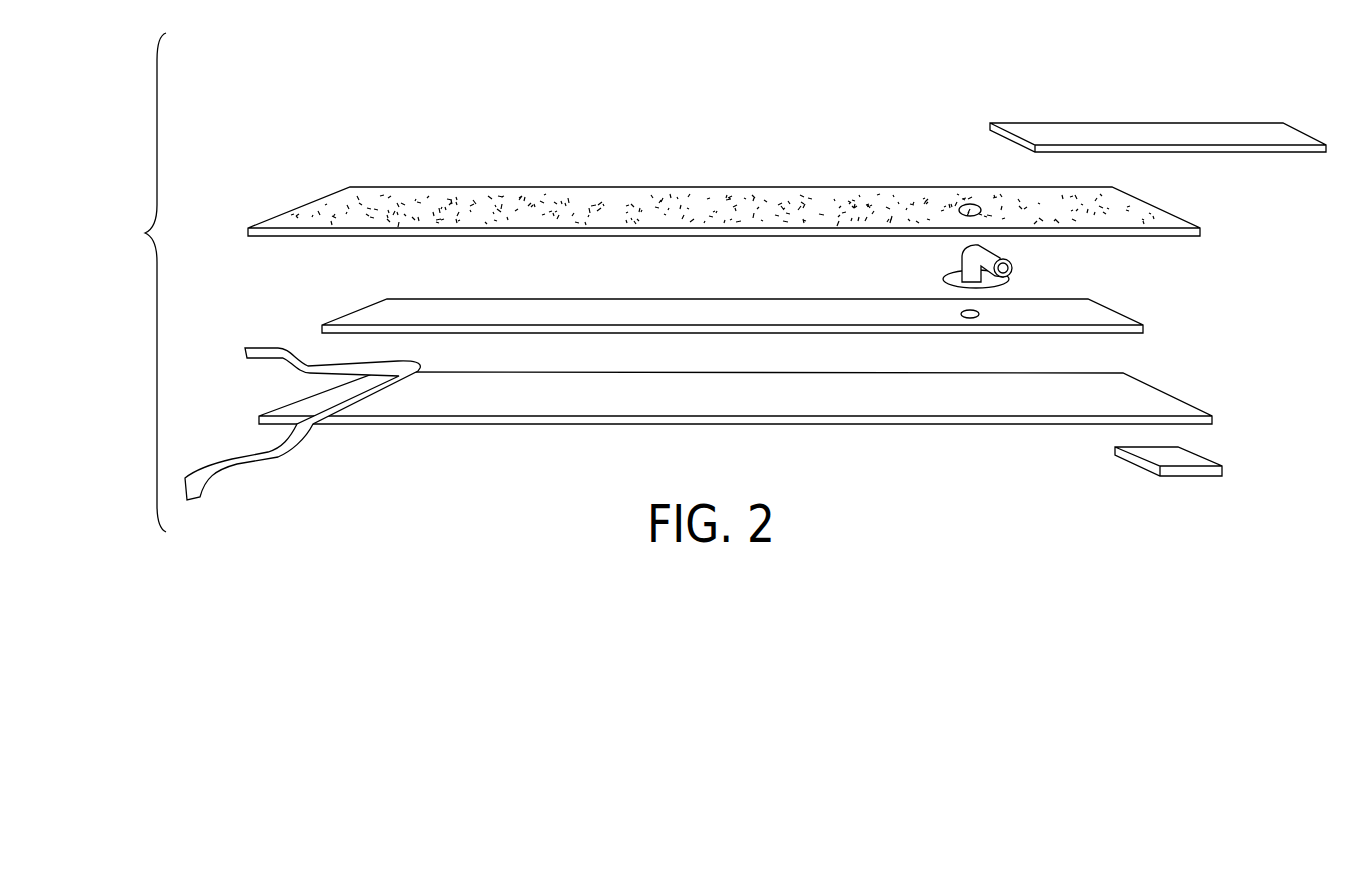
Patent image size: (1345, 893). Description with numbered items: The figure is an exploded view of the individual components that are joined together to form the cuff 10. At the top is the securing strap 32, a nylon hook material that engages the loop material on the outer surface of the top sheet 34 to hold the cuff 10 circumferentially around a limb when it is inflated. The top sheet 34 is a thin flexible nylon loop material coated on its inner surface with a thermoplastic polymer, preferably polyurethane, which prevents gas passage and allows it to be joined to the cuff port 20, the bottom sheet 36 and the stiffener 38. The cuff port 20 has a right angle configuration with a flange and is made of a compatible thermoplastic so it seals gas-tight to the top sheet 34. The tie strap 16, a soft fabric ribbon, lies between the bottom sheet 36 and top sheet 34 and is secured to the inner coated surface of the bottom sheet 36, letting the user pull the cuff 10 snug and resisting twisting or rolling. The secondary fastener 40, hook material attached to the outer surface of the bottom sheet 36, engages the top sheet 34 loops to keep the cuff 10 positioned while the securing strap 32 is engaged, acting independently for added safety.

The cuff 10 is at (132, 282).
The tie strap 16 is at (203, 490).
The cuff port 20 is at (960, 258).
The securing strap 32 is at (1204, 123).
The top sheet 34 is at (1138, 205).
The bottom sheet 36 is at (1178, 395).
The stiffener 38 is at (1107, 310).
The secondary fastener 40 is at (1197, 476).